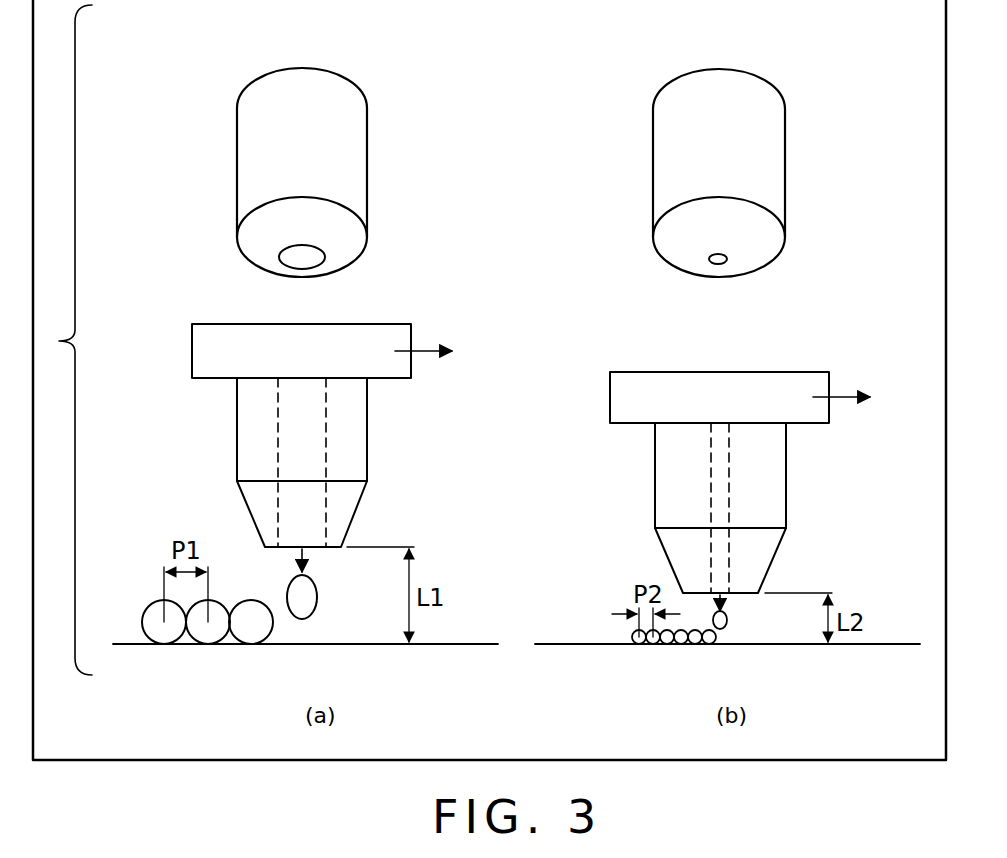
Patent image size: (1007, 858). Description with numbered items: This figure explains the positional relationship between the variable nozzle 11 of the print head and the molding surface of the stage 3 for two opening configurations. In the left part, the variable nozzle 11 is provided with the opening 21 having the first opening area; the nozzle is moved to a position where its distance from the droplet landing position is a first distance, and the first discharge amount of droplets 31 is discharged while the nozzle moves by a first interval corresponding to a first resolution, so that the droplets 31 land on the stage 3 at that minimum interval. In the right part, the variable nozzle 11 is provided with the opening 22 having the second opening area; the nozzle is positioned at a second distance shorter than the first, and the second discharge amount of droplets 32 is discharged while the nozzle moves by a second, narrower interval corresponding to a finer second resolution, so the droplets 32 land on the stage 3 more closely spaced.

The variable nozzle 11 is at (337, 72).
The opening having the first opening area 21 is at (325, 257).
The opening having the second opening area 22 is at (727, 260).
The stage 3 is at (487, 643).
The droplets 31 is at (316, 607).
The droplets 32 is at (727, 622).